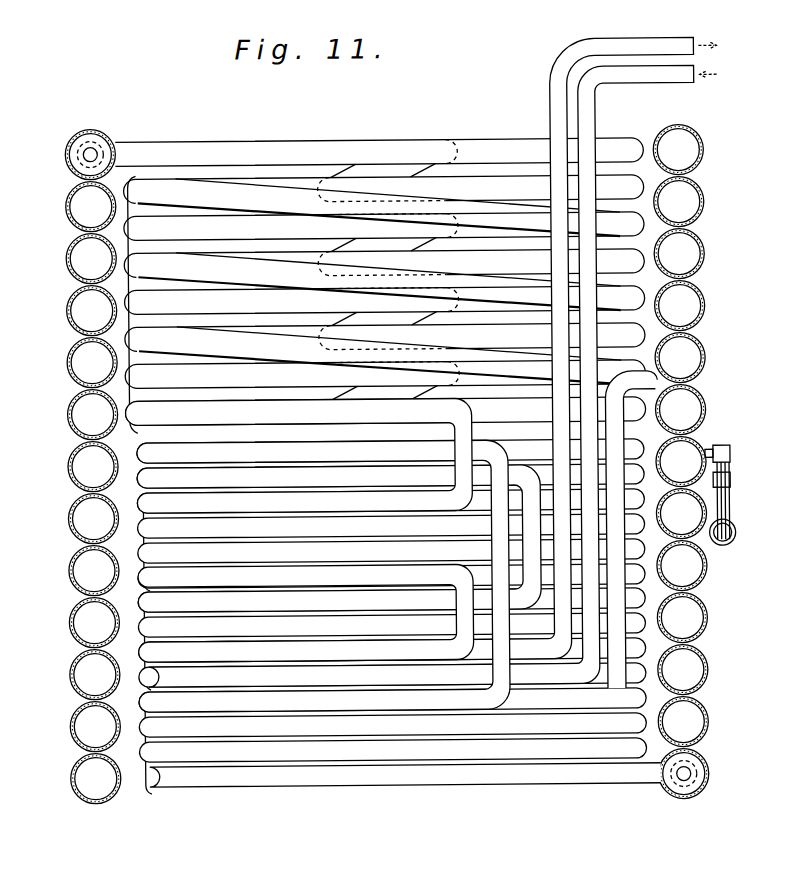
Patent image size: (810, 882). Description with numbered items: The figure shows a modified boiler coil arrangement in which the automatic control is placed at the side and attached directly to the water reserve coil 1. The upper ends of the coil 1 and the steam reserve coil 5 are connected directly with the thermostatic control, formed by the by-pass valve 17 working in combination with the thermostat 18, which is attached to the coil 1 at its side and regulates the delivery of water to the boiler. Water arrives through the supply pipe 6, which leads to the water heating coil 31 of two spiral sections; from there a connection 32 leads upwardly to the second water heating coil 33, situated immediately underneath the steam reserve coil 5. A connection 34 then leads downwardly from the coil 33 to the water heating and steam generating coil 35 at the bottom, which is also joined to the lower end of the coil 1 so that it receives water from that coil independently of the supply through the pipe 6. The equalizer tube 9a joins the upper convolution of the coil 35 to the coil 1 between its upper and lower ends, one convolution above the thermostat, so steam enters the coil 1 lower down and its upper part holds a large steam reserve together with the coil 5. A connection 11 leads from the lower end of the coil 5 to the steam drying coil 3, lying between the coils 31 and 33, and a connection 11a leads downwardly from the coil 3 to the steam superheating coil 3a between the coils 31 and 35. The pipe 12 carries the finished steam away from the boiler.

The coil 1 is at (72, 430).
The steam drying coil 3 is at (142, 540).
The steam superheating coil 3a is at (140, 663).
The steam reserve coil 5 is at (128, 302).
The pipe 6 is at (675, 77).
The equalizer tube 9a is at (617, 607).
The connection 11 is at (467, 430).
The connection 11a is at (462, 640).
The outlet pipe 12 is at (572, 66).
The by-pass valve 17 is at (731, 550).
The thermostat 18 is at (723, 443).
The water heating coil 31 is at (140, 617).
The connection 32 is at (538, 677).
The second water heating coil 33 is at (143, 485).
The connection 34 is at (500, 680).
The water heating and steam generating coil 35 is at (143, 737).